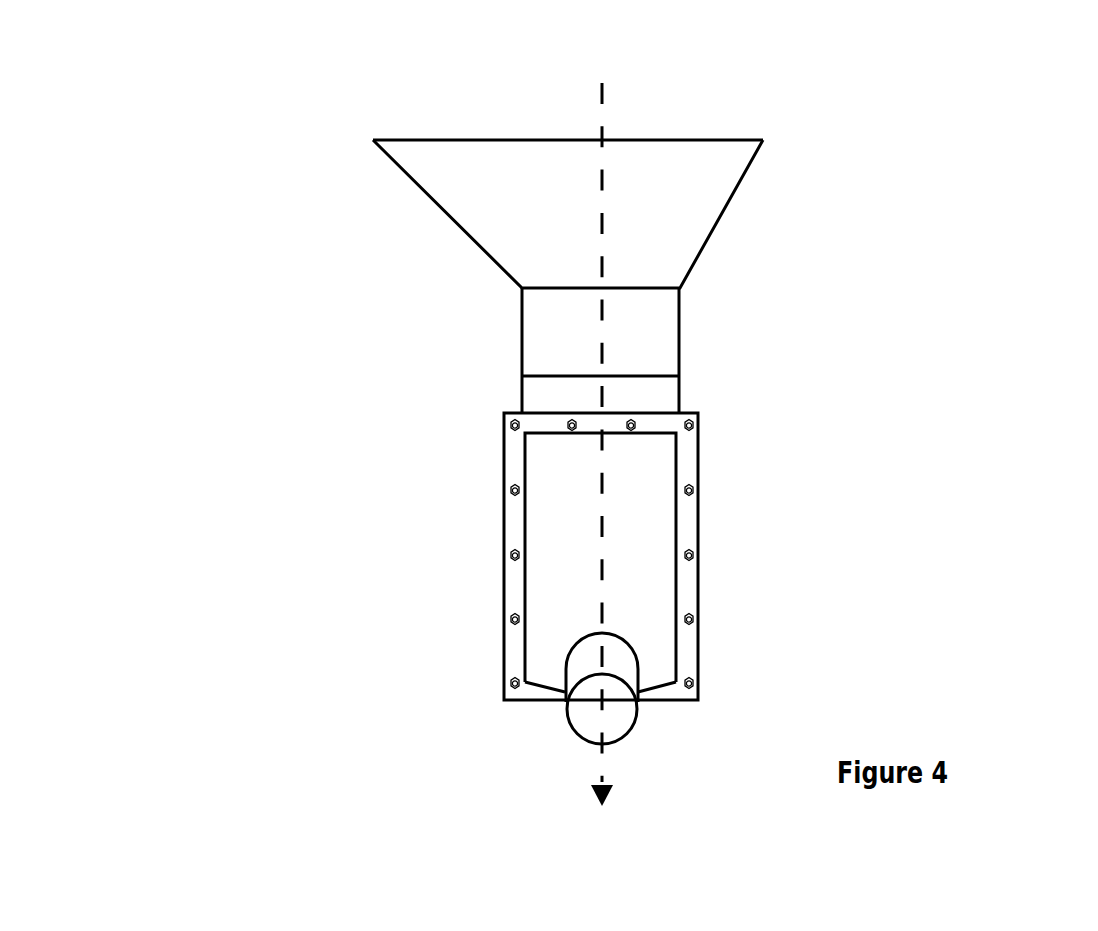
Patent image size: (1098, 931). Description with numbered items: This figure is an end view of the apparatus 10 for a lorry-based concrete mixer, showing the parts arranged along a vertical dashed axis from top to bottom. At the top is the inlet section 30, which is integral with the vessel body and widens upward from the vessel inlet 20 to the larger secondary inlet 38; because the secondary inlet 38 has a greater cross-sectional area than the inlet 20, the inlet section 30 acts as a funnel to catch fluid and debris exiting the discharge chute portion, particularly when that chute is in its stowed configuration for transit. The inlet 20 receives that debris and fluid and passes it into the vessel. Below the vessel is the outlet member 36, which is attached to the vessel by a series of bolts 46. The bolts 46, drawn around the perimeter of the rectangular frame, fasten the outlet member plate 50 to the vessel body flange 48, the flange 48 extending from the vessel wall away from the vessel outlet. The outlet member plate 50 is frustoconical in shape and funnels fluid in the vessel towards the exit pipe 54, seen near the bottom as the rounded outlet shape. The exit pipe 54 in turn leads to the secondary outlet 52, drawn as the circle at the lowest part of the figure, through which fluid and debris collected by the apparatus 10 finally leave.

The apparatus 10 is at (372, 299).
The vessel inlet 20 is at (680, 290).
The inlet section 30 is at (756, 155).
The outlet member 36 is at (619, 543).
The secondary inlet 38 is at (457, 139).
The bolts 46 is at (517, 560).
The vessel body flange 48 is at (517, 454).
The outlet member plate 50 is at (648, 493).
The secondary outlet 52 is at (616, 740).
The exit pipe 54 is at (637, 655).